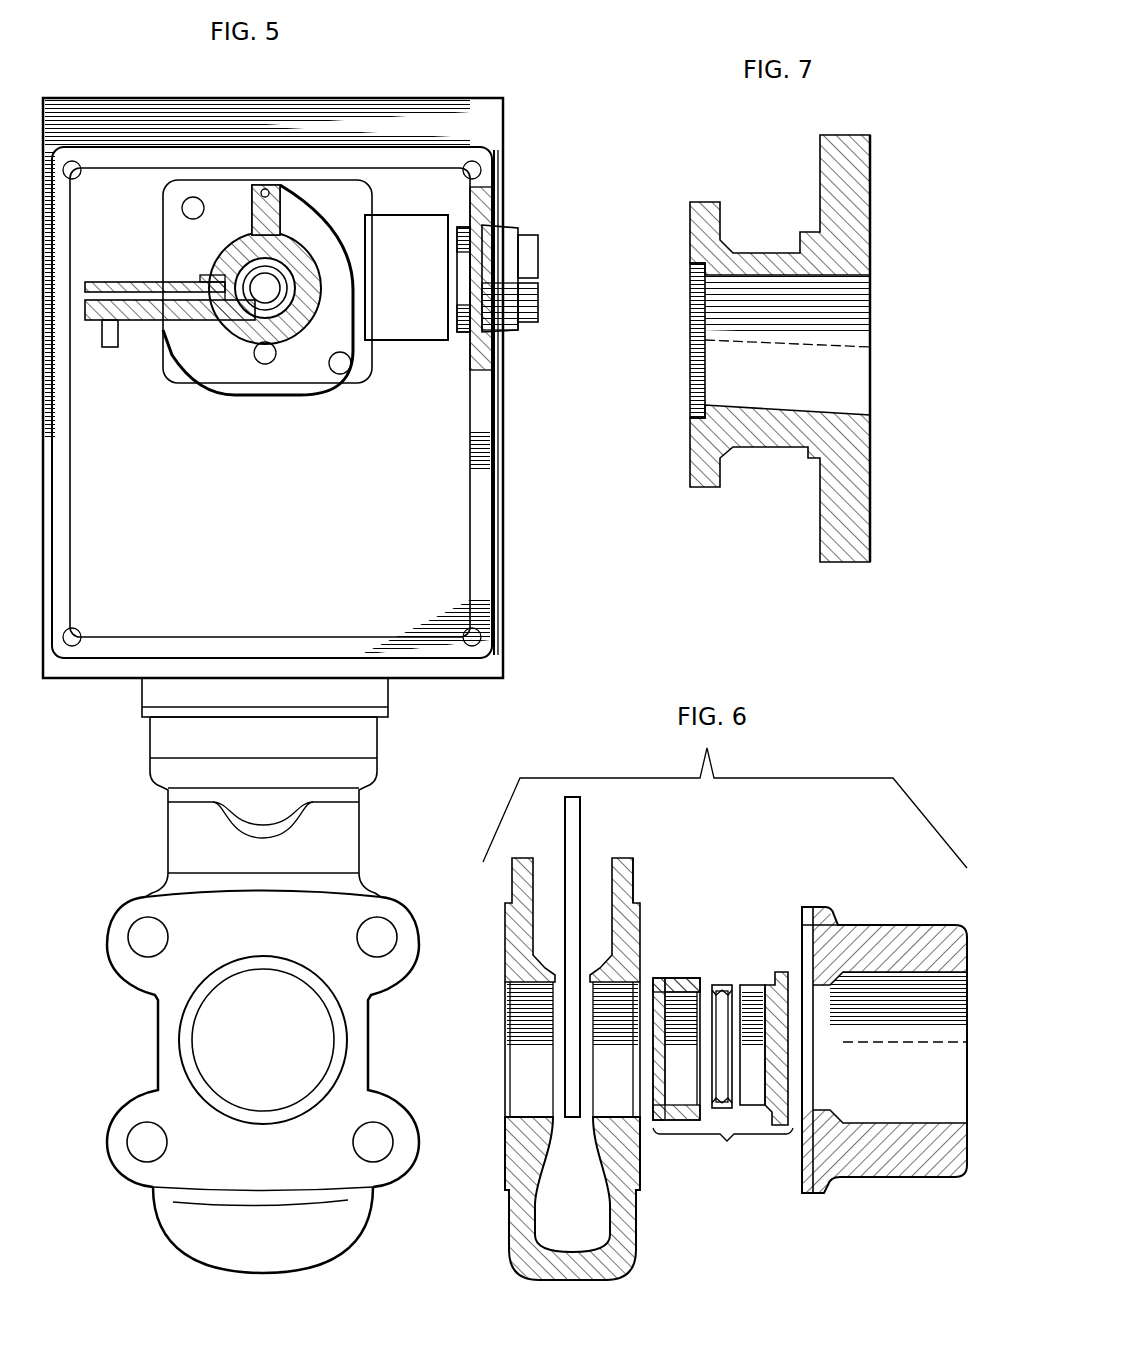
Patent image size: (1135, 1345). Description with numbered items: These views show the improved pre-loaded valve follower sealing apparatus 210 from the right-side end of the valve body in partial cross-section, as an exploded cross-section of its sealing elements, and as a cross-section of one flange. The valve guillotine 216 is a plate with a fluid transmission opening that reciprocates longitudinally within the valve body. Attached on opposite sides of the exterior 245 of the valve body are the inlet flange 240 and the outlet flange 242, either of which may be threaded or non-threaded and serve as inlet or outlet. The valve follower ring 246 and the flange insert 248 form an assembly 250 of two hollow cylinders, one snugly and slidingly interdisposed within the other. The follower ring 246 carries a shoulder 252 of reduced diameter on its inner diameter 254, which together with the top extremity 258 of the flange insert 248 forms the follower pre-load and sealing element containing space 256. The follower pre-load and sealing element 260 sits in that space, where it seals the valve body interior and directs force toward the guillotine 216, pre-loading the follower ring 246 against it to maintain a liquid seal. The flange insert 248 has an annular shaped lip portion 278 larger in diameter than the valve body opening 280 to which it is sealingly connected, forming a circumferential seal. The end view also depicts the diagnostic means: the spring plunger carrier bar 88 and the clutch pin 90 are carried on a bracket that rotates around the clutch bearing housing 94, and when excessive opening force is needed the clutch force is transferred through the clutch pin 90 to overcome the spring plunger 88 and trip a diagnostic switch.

In FIG. 5, the spring plunger carrier bar 88 is at (128, 282).
In FIG. 5, the clutch pin 90 is at (266, 190).
In FIG. 5, the clutch bearing housing 94 is at (323, 242).
In FIG. 5, the outlet flange 242 is at (190, 1060).
In FIG. 6, the outlet flange 242 is at (883, 1157).
In FIG. 7, the inlet flange 240 is at (830, 477).
In FIG. 6, the valve follower sealing apparatus 210 is at (798, 858).
In FIG. 6, the valve guillotine 216 is at (570, 1058).
In FIG. 6, the exterior 245 is at (640, 1158).
In FIG. 6, the valve body opening 280 is at (635, 903).
In FIG. 6, the shoulder 252 is at (653, 983).
In FIG. 6, the follower pre-load and sealing element containing space 256 is at (678, 983).
In FIG. 6, the valve follower ring 246 is at (697, 988).
In FIG. 6, the inner diameter 254 is at (712, 988).
In FIG. 6, the top extremity 258 is at (743, 985).
In FIG. 6, the flange insert 248 is at (762, 985).
In FIG. 6, the assembly 250 is at (723, 1147).
In FIG. 6, the follower pre-load and sealing element 260 is at (720, 1067).
In FIG. 6, the annular shaped lip portion 278 is at (803, 957).